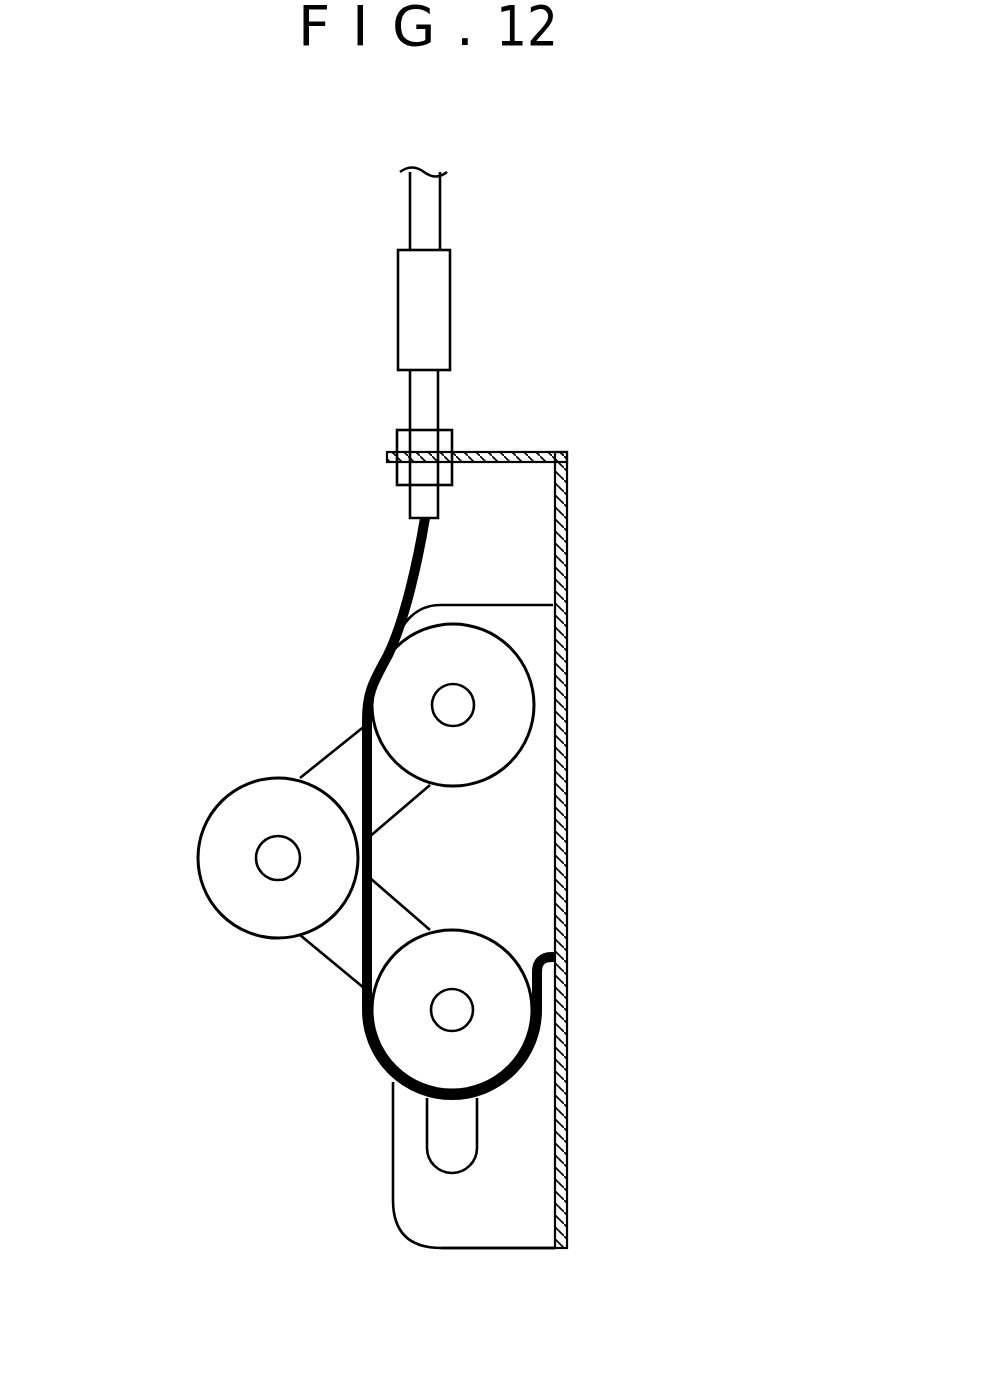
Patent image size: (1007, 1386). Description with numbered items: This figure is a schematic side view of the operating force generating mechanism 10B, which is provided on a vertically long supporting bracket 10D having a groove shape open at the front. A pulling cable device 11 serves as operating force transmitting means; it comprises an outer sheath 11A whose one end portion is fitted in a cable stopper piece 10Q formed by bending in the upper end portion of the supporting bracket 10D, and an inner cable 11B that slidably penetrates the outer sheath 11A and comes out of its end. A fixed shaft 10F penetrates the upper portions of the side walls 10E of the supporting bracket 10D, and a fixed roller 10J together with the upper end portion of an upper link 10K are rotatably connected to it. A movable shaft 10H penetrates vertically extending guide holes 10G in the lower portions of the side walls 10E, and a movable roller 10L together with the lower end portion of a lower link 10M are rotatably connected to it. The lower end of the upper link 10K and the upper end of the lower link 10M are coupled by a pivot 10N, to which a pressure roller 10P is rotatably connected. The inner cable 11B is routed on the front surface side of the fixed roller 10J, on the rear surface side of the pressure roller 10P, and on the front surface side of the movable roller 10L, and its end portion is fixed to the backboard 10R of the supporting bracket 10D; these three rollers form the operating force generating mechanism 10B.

The pulling cable device 11 is at (406, 227).
The outer sheath 11A is at (440, 210).
The inner cable 11B is at (410, 583).
The operating force generating mechanism 10B is at (296, 656).
The supporting bracket 10D is at (572, 531).
The side wall 10E is at (488, 1248).
The fixed shaft 10F is at (453, 705).
The guide hole 10G is at (477, 1133).
The movable shaft 10H is at (450, 1013).
The fixed roller 10J is at (520, 658).
The upper link 10K is at (325, 750).
The movable roller 10L is at (517, 957).
The lower link 10M is at (327, 963).
The pivot 10N is at (277, 863).
The pressure roller 10P is at (196, 850).
The cable stopper piece 10Q is at (513, 448).
The backboard 10R is at (567, 1037).